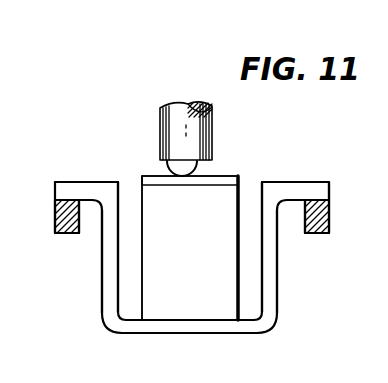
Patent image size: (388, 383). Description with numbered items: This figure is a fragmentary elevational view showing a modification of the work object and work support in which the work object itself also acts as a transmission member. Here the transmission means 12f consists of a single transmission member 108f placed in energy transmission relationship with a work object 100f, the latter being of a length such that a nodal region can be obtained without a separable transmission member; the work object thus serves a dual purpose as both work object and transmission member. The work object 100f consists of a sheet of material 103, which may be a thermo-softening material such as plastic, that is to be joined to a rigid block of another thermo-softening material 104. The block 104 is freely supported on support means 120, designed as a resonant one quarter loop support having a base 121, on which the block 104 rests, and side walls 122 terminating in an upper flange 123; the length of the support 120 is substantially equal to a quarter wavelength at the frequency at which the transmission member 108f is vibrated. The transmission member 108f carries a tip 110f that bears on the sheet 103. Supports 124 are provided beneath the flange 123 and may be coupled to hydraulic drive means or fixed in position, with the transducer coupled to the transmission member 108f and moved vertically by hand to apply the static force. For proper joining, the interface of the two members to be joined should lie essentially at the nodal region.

The transmission means 12f is at (153, 115).
The work object 100f is at (145, 170).
The transmission member 108f is at (214, 125).
The hemispherical tip of fastener 110f is at (198, 171).
The sheet of material 103 is at (238, 176).
The rigid block 104 is at (224, 238).
The support means 120 is at (283, 317).
The base 121 is at (189, 332).
The side walls 122 is at (105, 290).
The upper flange 123 is at (75, 190).
The supports 124 is at (72, 232).